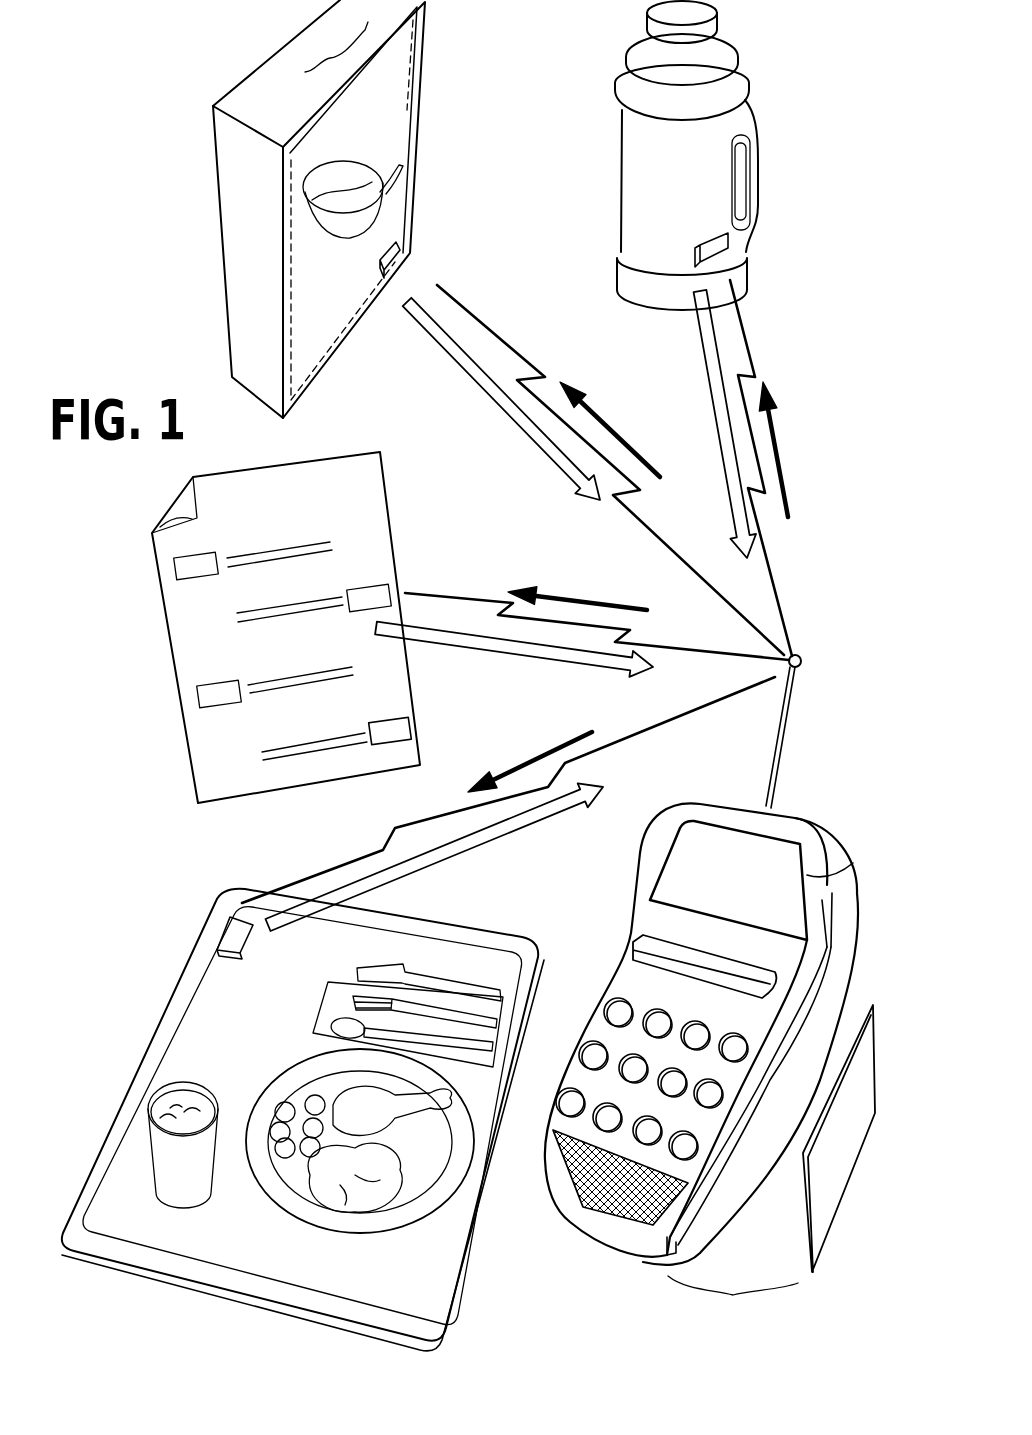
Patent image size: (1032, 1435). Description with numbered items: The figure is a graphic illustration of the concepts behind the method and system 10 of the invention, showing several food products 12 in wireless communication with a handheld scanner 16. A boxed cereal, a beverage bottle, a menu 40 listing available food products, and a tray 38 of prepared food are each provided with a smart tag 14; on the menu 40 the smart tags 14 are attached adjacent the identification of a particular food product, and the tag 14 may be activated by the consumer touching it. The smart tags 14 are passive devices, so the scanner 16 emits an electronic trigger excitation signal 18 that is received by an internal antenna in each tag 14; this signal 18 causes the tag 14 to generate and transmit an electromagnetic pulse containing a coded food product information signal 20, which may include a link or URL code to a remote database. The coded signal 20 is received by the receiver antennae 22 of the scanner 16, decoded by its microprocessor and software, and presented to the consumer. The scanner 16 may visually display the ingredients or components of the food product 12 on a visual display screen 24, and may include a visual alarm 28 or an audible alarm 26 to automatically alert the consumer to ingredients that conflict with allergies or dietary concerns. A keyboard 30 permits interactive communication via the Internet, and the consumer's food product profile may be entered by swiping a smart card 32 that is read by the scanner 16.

The method and system 10 is at (161, 114).
The food products 12 is at (253, 239).
The smart tags 14 is at (400, 258).
The scanner 16 is at (830, 822).
The trigger signal 18 is at (493, 332).
The food product information signal 20 is at (487, 388).
The receiver antennae 22 is at (790, 738).
The visual display screen 24 is at (807, 875).
The audible alarm 26 is at (592, 1203).
The visual alarm 28 is at (712, 957).
The keyboard 30 is at (596, 1000).
The smart card 32 is at (818, 1192).
The tray 38 is at (198, 1043).
The menu 40 is at (205, 633).